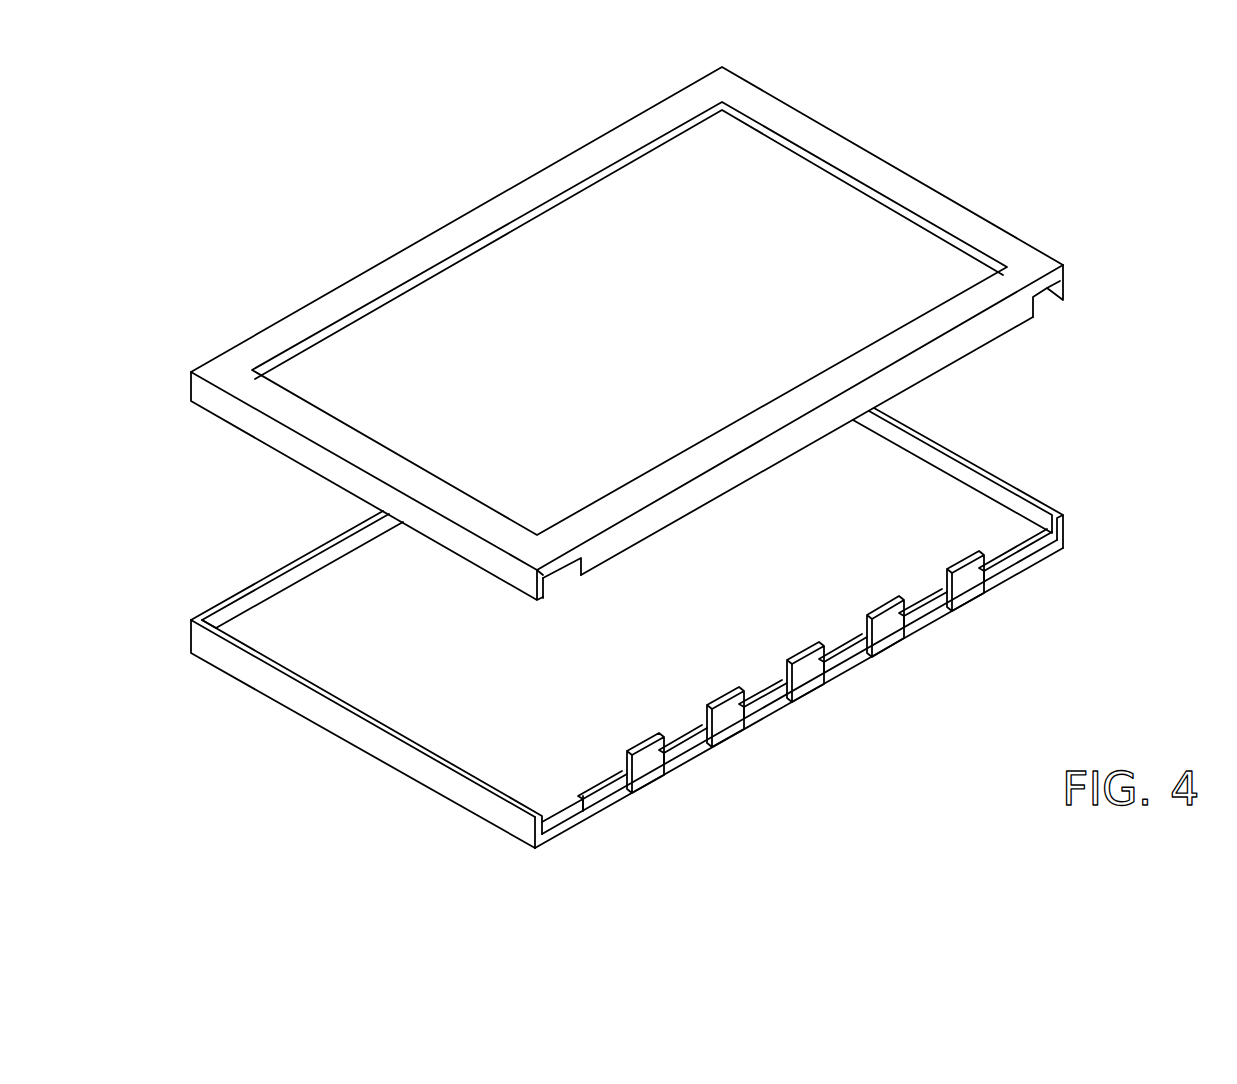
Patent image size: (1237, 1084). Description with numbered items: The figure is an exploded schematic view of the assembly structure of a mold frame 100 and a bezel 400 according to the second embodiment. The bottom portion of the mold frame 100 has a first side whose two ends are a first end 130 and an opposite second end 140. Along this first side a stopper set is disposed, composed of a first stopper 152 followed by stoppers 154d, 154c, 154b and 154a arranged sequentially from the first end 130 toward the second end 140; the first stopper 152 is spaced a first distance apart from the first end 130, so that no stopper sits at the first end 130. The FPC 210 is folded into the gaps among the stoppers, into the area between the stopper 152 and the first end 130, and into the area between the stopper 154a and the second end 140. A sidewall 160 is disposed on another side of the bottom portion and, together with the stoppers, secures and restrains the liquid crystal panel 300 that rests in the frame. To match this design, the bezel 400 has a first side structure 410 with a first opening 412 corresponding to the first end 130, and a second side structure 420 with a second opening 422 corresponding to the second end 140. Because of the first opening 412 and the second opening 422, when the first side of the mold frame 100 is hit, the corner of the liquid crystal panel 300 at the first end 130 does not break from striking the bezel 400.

The mold frame 100 is at (960, 452).
The first end 130 is at (1082, 509).
The second end 140 is at (524, 863).
The first stopper 152 is at (966, 589).
The stopper 154a is at (648, 771).
The stopper 154b is at (727, 725).
The stopper 154c is at (807, 680).
The stopper 154d is at (887, 635).
The sidewall 160 is at (373, 745).
The FPC 210 is at (604, 793).
The liquid crystal panel 300 is at (567, 733).
The bezel 400 is at (840, 150).
The first side structure 410 is at (1065, 272).
The first opening 412 is at (1058, 304).
The second side structure 420 is at (533, 571).
The second opening 422 is at (575, 584).